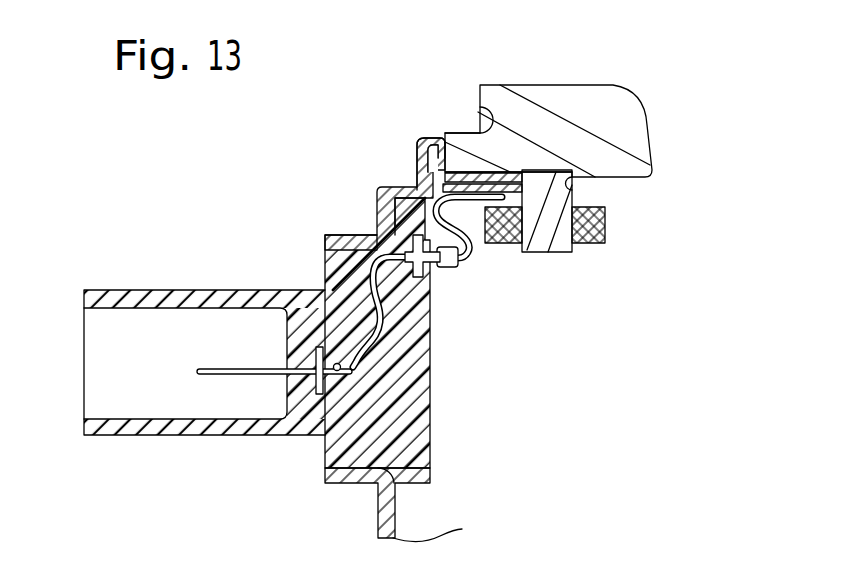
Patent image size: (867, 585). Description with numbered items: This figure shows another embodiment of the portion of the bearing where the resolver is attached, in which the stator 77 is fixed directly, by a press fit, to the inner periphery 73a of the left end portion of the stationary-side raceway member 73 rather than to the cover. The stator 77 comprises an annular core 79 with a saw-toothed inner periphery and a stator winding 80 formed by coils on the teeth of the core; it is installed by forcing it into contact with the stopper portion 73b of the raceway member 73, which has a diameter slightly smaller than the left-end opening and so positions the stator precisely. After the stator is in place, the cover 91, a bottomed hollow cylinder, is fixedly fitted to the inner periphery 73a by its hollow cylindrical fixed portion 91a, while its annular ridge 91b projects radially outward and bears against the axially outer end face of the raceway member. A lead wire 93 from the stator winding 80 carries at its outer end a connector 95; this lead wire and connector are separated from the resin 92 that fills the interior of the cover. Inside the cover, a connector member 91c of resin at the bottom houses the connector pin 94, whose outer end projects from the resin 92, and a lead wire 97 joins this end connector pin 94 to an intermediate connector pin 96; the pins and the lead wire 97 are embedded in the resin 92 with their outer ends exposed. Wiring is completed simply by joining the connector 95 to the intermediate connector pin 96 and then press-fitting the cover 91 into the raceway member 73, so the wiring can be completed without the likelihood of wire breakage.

The stationary-side raceway member 73 is at (585, 88).
The inner periphery of the left end portion of the stationary-side raceway member 73a is at (510, 172).
The stopper portion 73b is at (572, 198).
The stator 77 is at (541, 252).
The annular core 79 is at (568, 252).
The stator winding 80 is at (498, 243).
The cover 91 is at (380, 521).
The fixed portion 91a is at (463, 177).
The annular ridge 91b is at (420, 136).
The connector member 91c is at (118, 294).
The resin 92 is at (417, 388).
The lead wire 93 is at (405, 182).
The connector pin 94 is at (230, 372).
The connector 95 is at (375, 212).
The intermediate connector pin 96 is at (375, 222).
The lead wire 97 is at (370, 287).